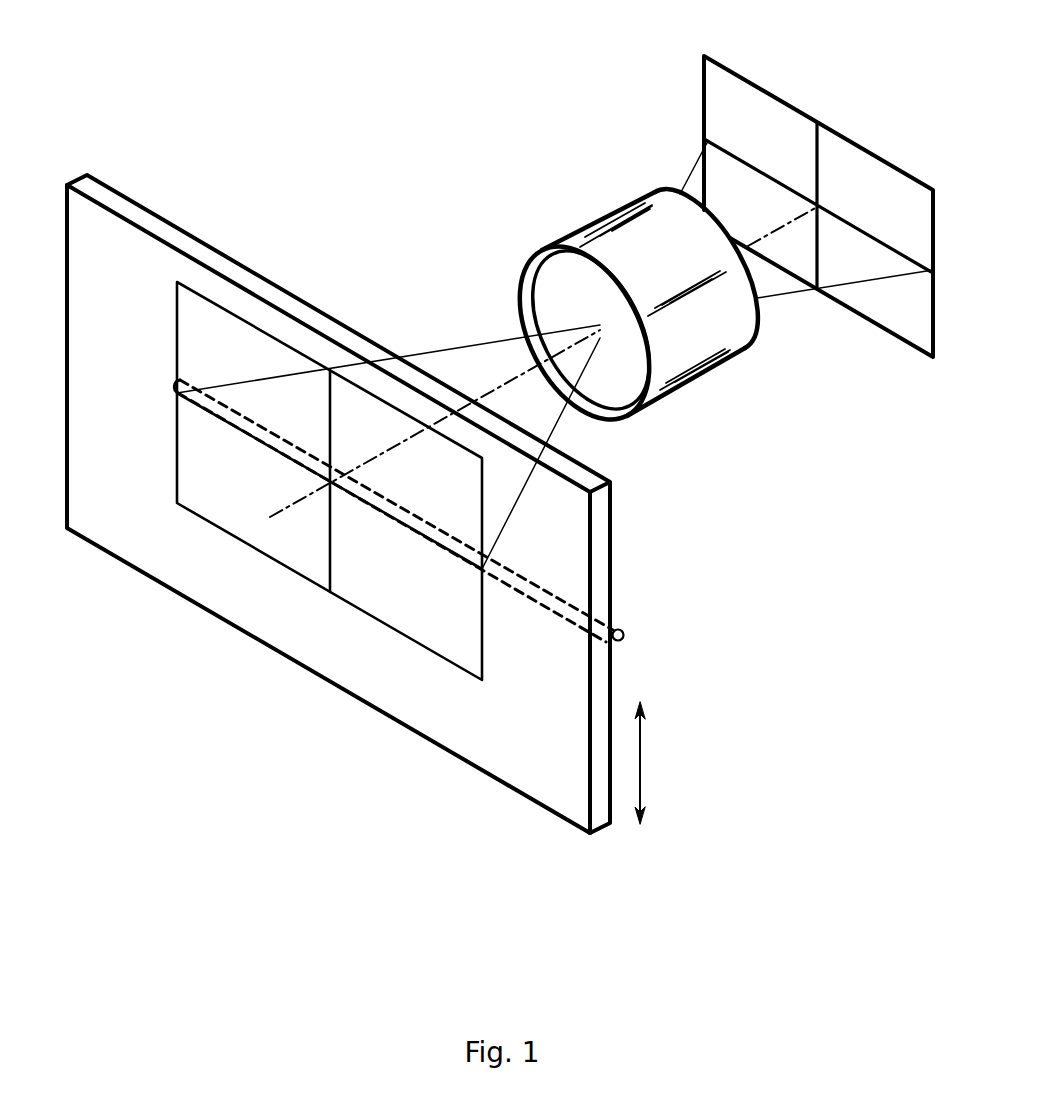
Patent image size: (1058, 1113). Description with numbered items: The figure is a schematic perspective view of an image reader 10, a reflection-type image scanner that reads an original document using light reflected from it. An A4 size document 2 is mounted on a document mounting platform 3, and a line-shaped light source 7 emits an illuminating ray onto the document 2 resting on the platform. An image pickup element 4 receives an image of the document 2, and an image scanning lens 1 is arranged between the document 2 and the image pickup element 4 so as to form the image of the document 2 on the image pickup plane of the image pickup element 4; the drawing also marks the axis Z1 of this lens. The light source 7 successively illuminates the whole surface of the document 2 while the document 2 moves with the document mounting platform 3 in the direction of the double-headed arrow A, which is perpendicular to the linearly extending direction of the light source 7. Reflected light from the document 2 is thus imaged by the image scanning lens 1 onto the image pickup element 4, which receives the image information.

The image reader 10 is at (331, 105).
The image scanning lens 1 is at (700, 348).
The document 2 is at (430, 602).
The document mounting platform 3 is at (510, 770).
The image pickup element 4 is at (743, 94).
The line-shaped light source 7 is at (614, 630).
The optical axis Z1 is at (513, 380).
The double-headed arrow A is at (642, 764).